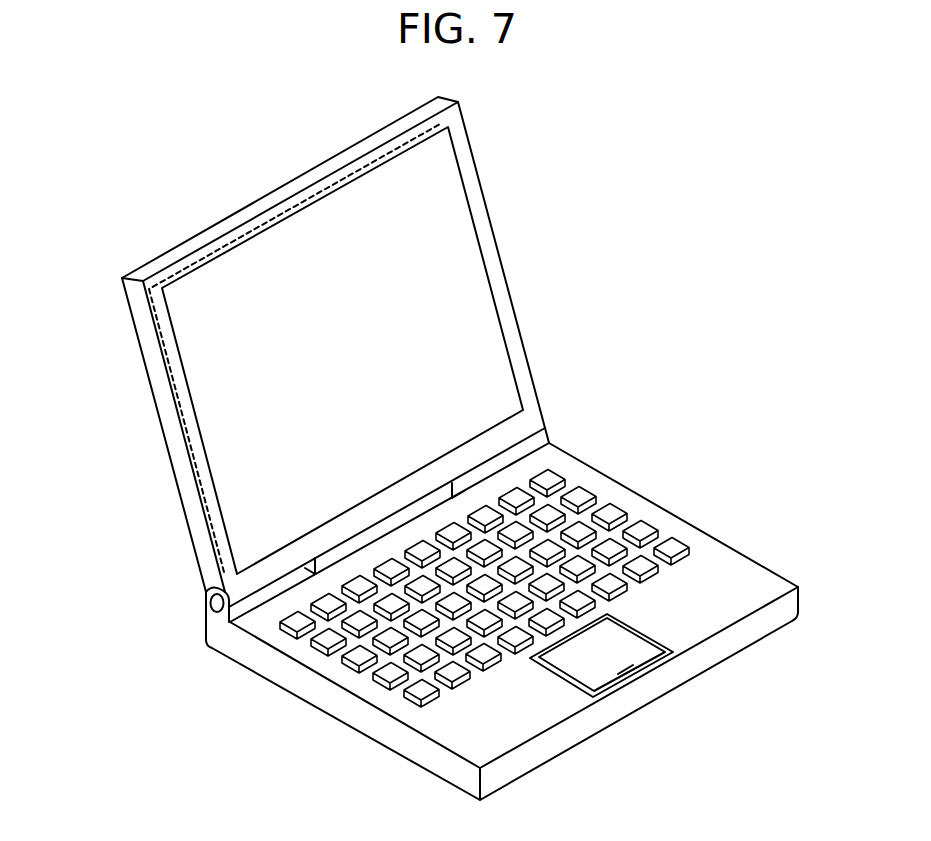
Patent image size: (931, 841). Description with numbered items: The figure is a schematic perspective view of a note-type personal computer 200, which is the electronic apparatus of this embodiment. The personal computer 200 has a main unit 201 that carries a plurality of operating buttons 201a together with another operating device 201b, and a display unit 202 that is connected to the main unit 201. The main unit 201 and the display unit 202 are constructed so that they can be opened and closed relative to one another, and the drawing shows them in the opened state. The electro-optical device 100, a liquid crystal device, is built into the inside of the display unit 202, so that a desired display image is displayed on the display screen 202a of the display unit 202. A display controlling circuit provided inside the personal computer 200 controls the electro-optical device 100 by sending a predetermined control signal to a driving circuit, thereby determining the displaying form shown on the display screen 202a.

The personal computer 200 is at (630, 117).
The electro-optical device 100 is at (240, 217).
The display unit 202 is at (182, 478).
The display screen 202a is at (480, 338).
The main unit 201 is at (713, 538).
The operating button 201a is at (577, 483).
The operating device 201b is at (628, 645).